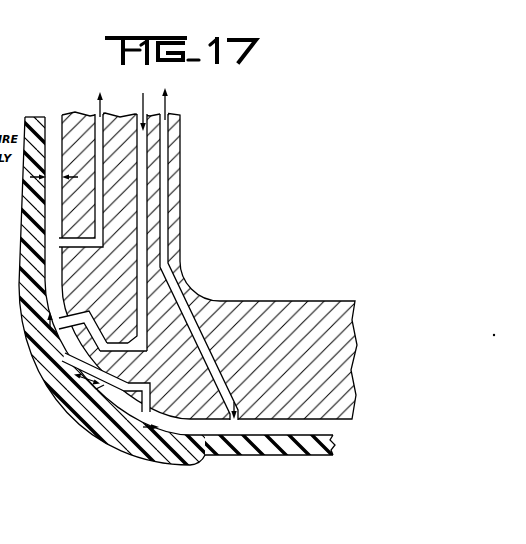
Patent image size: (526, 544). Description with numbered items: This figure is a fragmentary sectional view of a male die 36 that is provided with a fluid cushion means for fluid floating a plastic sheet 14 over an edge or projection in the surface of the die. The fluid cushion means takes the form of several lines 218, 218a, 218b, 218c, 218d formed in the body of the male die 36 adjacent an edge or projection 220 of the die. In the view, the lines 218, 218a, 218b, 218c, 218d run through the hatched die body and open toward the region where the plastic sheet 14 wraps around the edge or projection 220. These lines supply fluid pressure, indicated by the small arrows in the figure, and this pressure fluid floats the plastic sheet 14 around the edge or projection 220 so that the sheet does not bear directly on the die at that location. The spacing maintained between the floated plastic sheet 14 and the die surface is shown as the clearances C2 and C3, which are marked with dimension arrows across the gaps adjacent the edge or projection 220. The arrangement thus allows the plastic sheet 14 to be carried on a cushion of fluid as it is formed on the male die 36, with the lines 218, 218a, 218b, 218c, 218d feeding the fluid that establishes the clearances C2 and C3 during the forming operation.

The plastic sheet 14 is at (283, 453).
The male die 36 is at (303, 307).
The line 218 is at (150, 197).
The line 218a is at (93, 316).
The line 218b is at (110, 351).
The line 218c is at (131, 376).
The line 218d is at (145, 397).
The edge or projection 220 is at (123, 408).
The clearance C2 is at (54, 176).
The clearance C3 is at (90, 391).